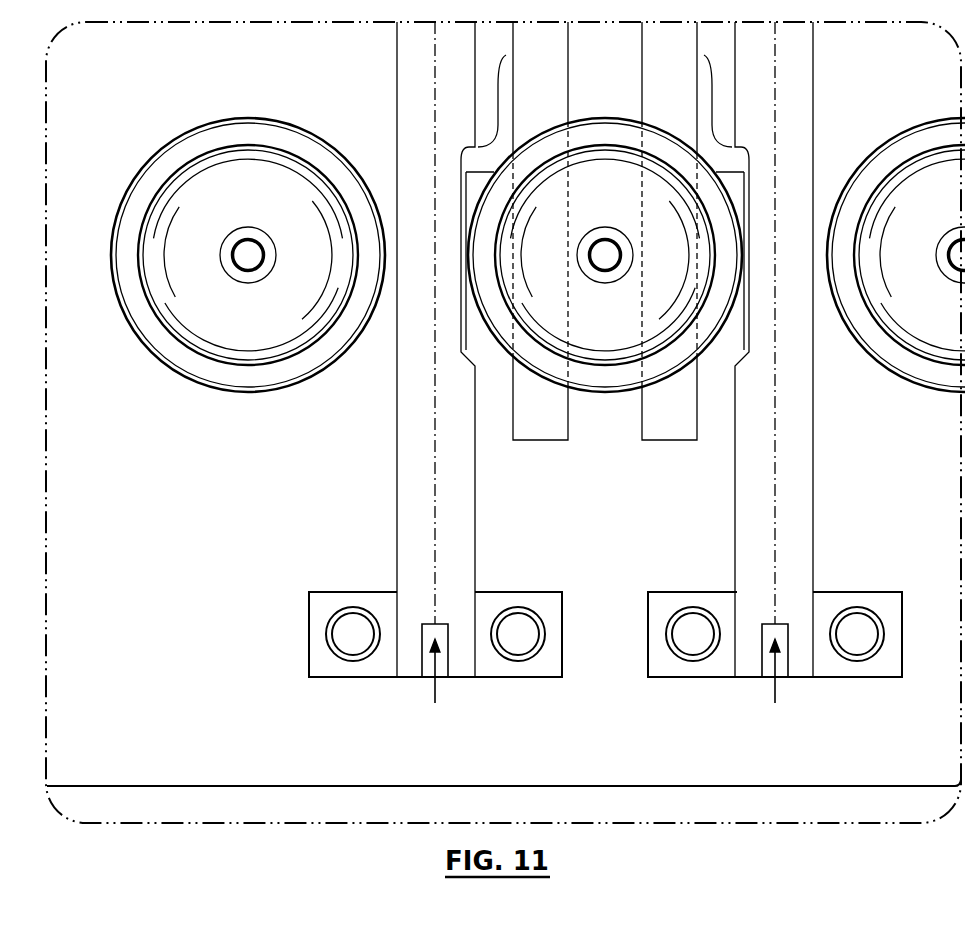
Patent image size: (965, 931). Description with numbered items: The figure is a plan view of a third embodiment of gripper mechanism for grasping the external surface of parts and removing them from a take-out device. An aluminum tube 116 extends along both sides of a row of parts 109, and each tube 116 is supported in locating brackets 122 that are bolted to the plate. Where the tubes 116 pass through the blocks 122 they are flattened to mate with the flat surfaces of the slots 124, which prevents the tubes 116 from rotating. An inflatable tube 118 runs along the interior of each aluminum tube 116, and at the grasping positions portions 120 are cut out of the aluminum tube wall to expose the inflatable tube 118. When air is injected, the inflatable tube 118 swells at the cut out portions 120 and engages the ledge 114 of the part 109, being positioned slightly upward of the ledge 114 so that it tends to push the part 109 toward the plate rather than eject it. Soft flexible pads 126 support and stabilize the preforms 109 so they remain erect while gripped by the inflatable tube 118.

The part 109 is at (276, 214).
The ledge 114 is at (181, 377).
The aluminum tube 116 is at (462, 508).
The inflatable tube 118 is at (537, 133).
The cut out portion 120 is at (506, 52).
The locating bracket 122 is at (538, 668).
The slot 124 is at (463, 667).
The soft flexible pad 126 is at (648, 425).